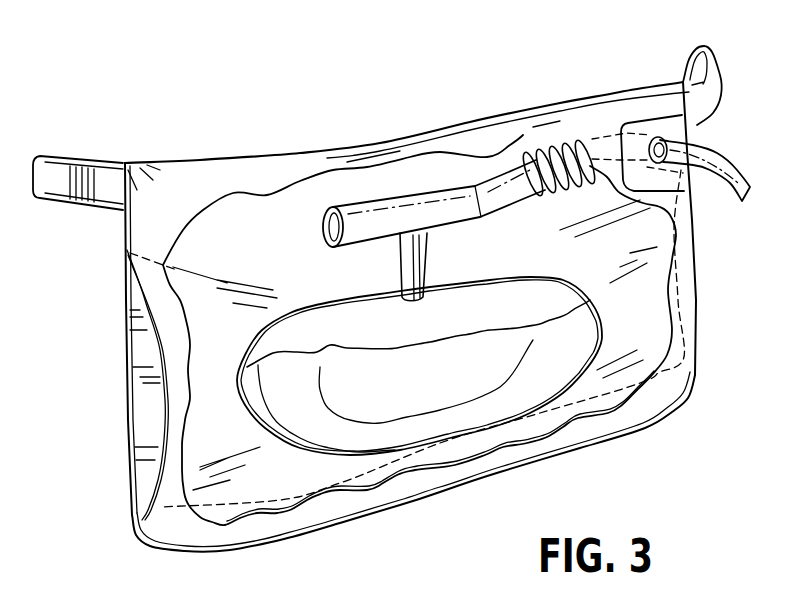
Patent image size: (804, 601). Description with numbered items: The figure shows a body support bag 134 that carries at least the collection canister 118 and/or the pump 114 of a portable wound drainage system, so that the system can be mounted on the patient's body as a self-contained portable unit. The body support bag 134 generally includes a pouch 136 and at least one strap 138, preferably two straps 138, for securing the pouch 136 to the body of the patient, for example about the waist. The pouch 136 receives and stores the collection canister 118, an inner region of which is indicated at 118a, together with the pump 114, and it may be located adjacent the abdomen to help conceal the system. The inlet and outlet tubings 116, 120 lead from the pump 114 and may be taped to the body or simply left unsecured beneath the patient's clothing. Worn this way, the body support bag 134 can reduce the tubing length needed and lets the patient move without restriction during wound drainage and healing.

The pump 114 is at (408, 205).
The inlet tubing 116 is at (737, 181).
The collection canister 118 is at (583, 380).
The inner chamber 118a is at (423, 410).
The outlet tubing 120 is at (402, 272).
The body support bag 134 is at (106, 387).
The pouch 136 is at (193, 497).
The strap 138 is at (56, 162).